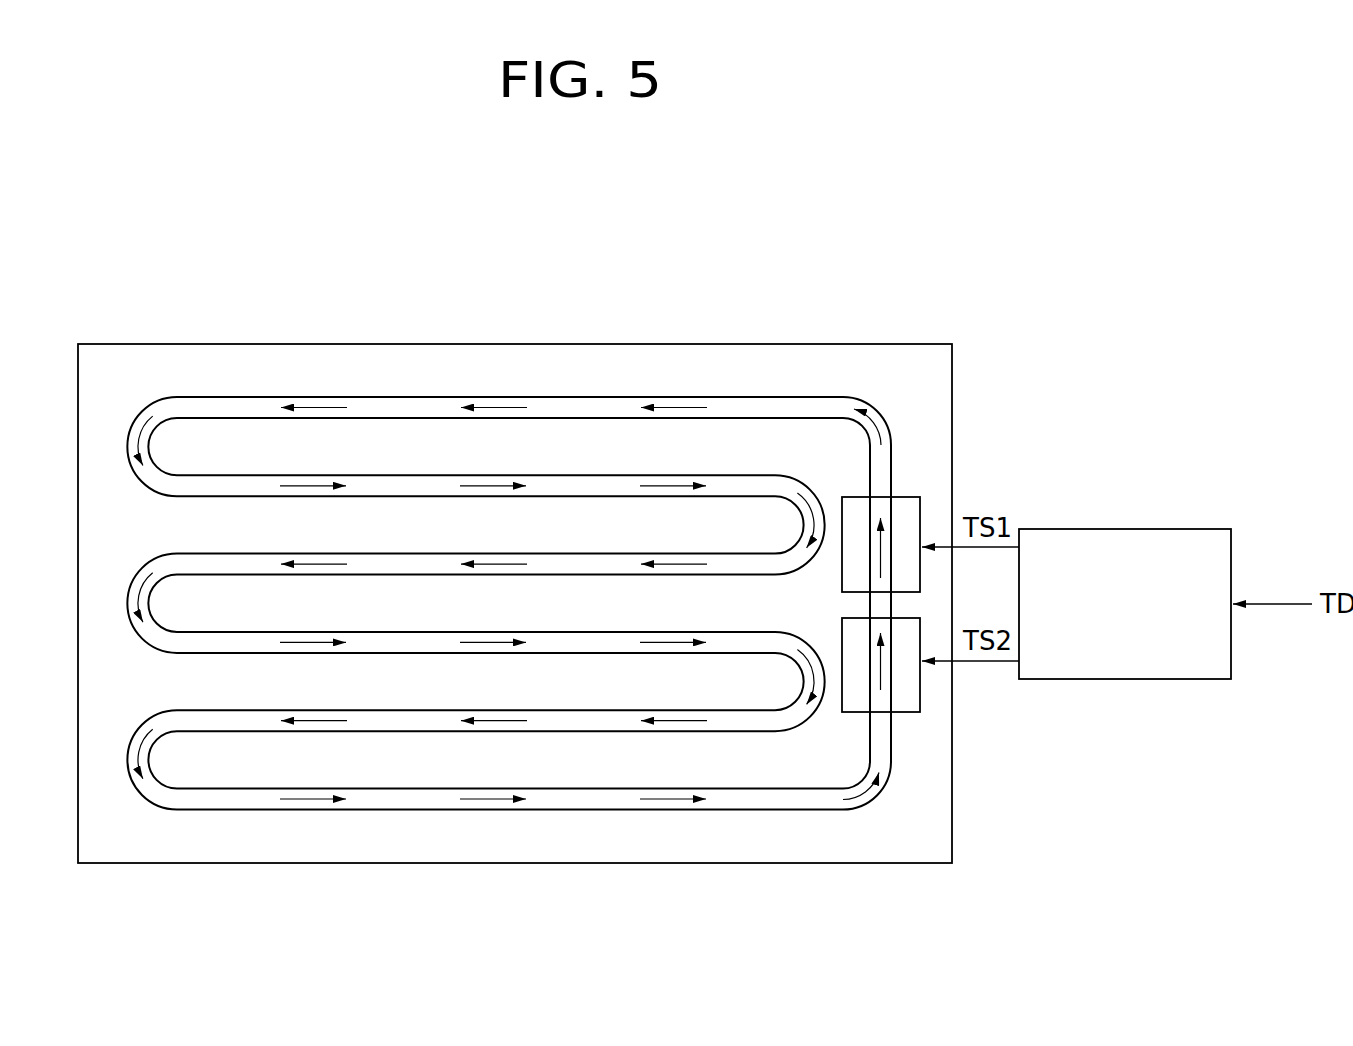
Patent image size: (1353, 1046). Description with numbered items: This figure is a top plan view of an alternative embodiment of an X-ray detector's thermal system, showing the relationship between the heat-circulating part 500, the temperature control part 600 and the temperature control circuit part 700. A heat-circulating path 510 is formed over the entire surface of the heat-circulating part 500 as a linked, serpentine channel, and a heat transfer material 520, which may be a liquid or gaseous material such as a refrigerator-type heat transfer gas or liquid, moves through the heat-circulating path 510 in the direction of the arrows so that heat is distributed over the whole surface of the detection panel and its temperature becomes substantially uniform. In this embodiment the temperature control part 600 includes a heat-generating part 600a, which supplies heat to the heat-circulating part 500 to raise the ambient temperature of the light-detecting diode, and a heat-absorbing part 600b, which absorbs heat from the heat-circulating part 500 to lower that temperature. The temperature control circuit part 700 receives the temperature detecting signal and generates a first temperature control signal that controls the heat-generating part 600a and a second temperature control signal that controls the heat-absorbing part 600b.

The heat-circulating part 500 is at (628, 338).
The heat-circulating path 510 is at (775, 397).
The heat transfer material 520 is at (501, 401).
The temperature control part 600 is at (978, 605).
The heat-generating part 600a is at (905, 497).
The heat-absorbing part 600b is at (905, 712).
The temperature control circuit part 700 is at (1088, 529).